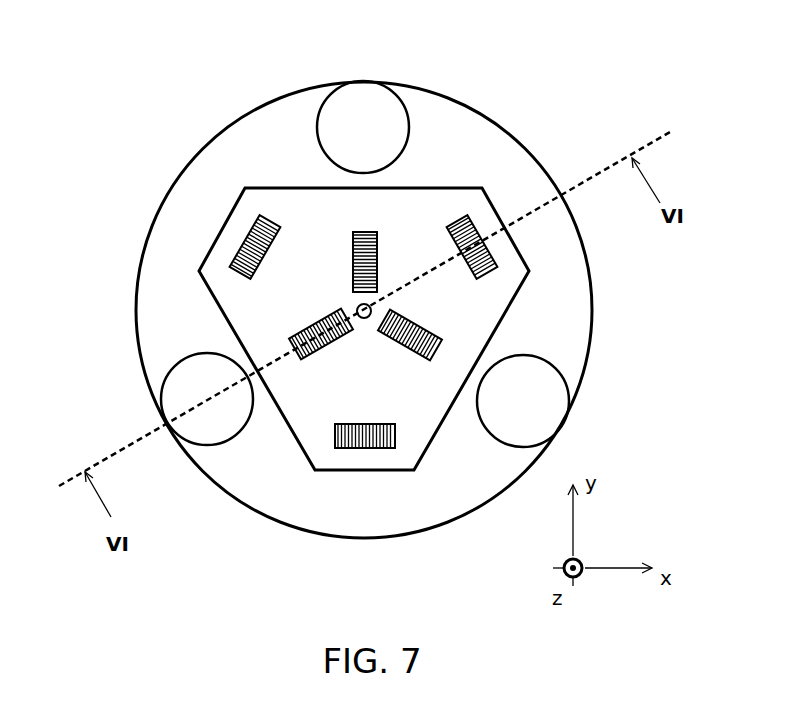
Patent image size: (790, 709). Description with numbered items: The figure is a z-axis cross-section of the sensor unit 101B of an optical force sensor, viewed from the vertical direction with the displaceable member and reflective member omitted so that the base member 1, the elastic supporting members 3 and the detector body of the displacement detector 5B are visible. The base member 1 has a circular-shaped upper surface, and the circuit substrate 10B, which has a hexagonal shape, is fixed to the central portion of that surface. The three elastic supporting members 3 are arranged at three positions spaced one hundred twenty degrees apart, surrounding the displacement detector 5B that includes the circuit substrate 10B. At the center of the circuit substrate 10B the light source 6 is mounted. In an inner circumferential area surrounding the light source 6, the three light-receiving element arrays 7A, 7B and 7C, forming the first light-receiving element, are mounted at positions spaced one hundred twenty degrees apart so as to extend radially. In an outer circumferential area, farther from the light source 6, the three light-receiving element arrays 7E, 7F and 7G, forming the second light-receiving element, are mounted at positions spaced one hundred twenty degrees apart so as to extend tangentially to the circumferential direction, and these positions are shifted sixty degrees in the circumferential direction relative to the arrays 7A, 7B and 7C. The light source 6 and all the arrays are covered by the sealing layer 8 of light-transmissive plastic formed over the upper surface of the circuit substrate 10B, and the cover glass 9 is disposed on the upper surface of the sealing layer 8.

The sensor unit 101B is at (524, 85).
The base member 1 is at (178, 176).
The elastic supporting members 3 is at (415, 87).
The displacement detector 5B is at (196, 299).
The light source 6 is at (363, 318).
The light-receiving element array 7A is at (365, 231).
The light-receiving element array 7B is at (420, 327).
The light-receiving element array 7C is at (311, 319).
The light-receiving element array 7E is at (340, 447).
The light-receiving element array 7F is at (245, 241).
The light-receiving element array 7G is at (483, 239).
The sealing layer 8 is at (445, 491).
The cover glass 9 is at (413, 412).
The circuit substrate 10B is at (288, 426).